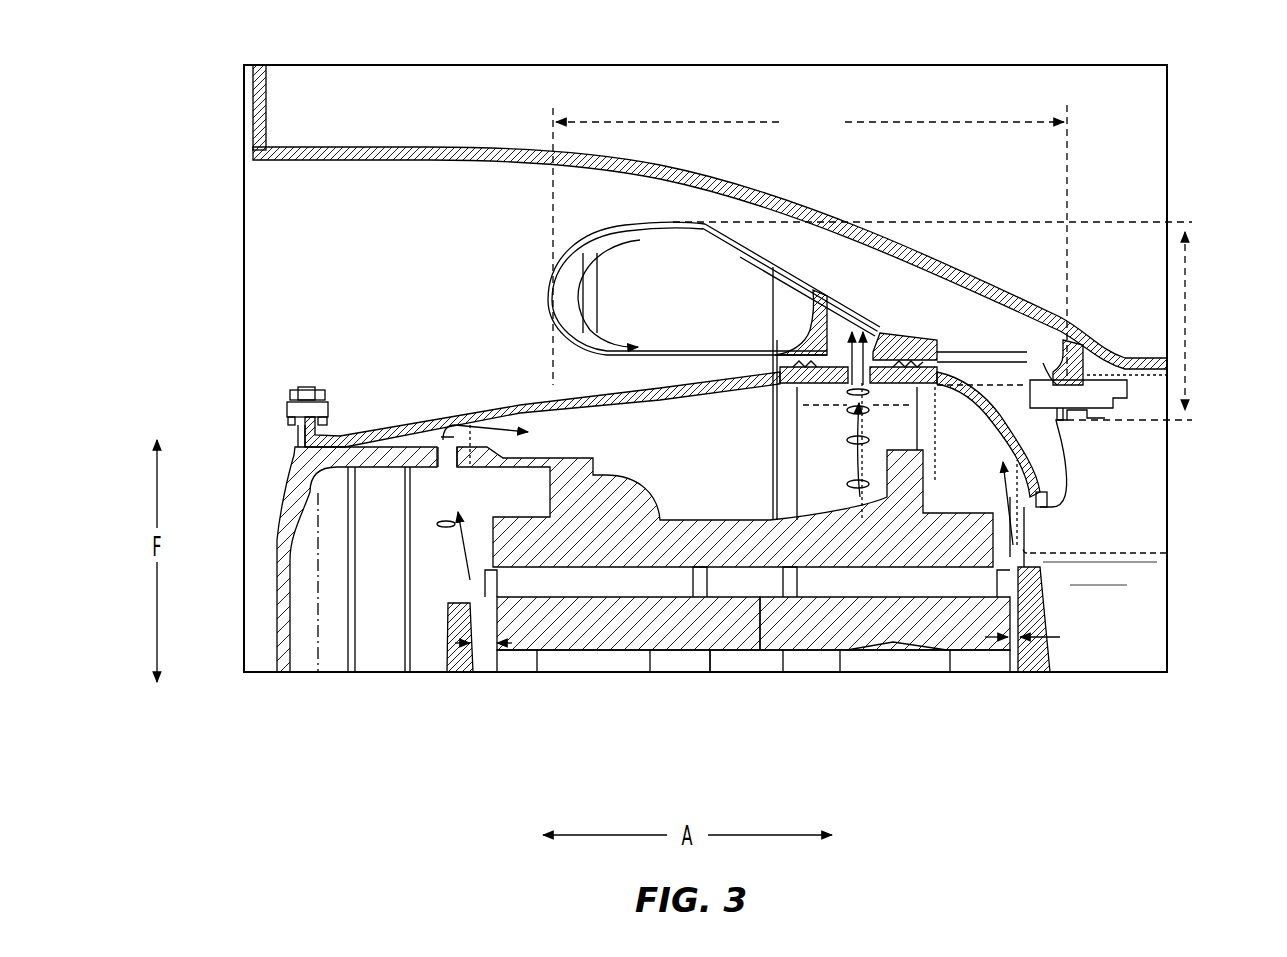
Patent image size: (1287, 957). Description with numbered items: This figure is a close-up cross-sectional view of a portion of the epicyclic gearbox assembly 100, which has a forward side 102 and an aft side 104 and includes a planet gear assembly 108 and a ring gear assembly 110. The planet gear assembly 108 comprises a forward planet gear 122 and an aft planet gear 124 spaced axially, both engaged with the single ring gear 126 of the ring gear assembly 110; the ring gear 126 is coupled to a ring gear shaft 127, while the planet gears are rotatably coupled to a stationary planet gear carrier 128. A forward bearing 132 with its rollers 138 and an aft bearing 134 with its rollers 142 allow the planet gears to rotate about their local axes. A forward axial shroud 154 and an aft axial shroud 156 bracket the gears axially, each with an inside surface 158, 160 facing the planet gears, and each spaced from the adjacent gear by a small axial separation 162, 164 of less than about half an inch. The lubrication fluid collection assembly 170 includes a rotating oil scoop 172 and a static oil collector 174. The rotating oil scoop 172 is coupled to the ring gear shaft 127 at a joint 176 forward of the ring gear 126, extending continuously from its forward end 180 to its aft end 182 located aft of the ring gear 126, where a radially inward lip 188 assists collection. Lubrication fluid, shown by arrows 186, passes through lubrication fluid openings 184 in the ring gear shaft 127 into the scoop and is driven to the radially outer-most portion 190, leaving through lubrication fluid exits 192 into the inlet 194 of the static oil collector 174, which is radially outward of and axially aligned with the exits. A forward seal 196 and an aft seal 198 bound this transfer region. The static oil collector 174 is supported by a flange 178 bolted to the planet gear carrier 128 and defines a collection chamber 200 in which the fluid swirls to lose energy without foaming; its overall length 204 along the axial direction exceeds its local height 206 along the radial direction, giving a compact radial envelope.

The epicyclic gearbox assembly 100 is at (945, 62).
The forward side 102 is at (196, 366).
The aft side 104 is at (1223, 385).
The planet gear assembly 108 is at (1147, 596).
The ring gear assembly 110 is at (339, 315).
The forward planet gear 122 is at (601, 632).
The aft planet gear 124 is at (872, 632).
The ring gear 126 is at (738, 538).
The ring gear shaft 127 is at (368, 464).
The planet gear carrier 128 is at (1148, 476).
The forward bearing 132 is at (493, 663).
The aft bearing 134 is at (990, 662).
The rollers 138 is at (575, 665).
The rollers 142 is at (893, 665).
The forward axial shroud 154 is at (447, 652).
The aft axial shroud 156 is at (1050, 655).
The inside surface 158 is at (474, 619).
The inside surface 160 is at (1010, 591).
The axial separation 162 is at (447, 632).
The axial separation 164 is at (1060, 637).
The lubrication fluid collection assembly 170 is at (938, 300).
The rotating oil scoop 172 is at (618, 396).
The static oil collector 174 is at (714, 238).
The joint 176 is at (310, 384).
The flange 178 is at (1068, 372).
The forward end 180 is at (377, 390).
The aft end 182 is at (1047, 462).
The lubrication fluid openings 184 is at (458, 474).
The arrows 186 is at (795, 265).
The lip 188 is at (1045, 480).
The radially outer-most portion 190 is at (924, 405).
The lubrication fluid exits 192 is at (868, 483).
The inlet 194 is at (878, 332).
The forward seal 196 is at (788, 364).
The aft seal 198 is at (934, 361).
The collection chamber 200 is at (672, 307).
The overall length 204 is at (716, 118).
The local height 206 is at (1188, 287).